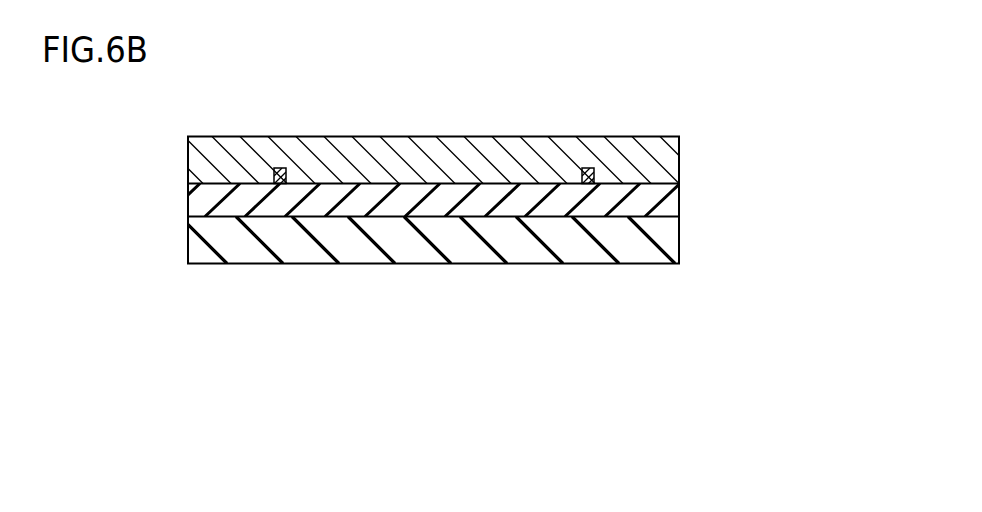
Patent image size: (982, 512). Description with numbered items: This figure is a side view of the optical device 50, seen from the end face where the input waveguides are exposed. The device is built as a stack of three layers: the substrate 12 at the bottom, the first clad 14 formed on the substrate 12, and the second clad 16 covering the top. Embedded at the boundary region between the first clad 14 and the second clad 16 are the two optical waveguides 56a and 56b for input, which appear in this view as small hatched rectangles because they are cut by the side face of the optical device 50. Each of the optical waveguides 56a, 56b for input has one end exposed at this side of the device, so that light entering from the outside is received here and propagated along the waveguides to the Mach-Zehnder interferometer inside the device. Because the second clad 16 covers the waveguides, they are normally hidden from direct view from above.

The optical device 50 is at (627, 112).
The second clad 16 is at (663, 157).
The first clad 14 is at (663, 195).
The substrate 12 is at (663, 238).
The optical waveguide for input 56a is at (276, 184).
The optical waveguide for input 56b is at (584, 184).